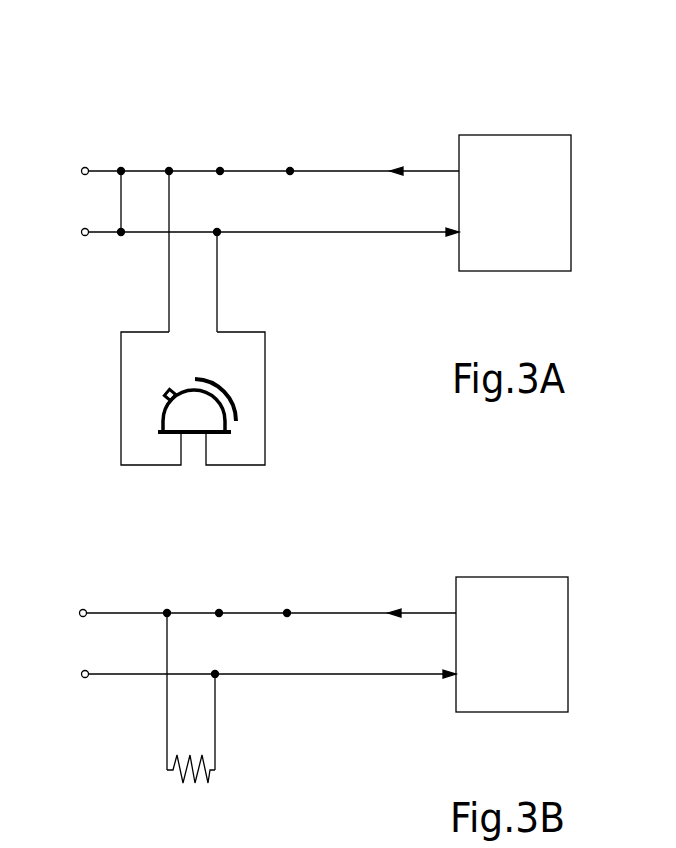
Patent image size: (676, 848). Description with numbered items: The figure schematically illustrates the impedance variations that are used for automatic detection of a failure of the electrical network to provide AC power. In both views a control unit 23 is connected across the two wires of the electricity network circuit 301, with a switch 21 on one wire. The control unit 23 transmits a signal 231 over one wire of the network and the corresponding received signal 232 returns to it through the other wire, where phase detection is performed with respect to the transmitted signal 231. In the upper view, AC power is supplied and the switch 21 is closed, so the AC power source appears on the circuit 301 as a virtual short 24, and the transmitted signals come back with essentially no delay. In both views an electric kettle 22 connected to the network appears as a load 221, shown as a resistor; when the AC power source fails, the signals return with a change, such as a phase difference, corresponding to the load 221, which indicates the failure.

In FIG. 3A, the switch 21 is at (260, 170).
In FIG. 3B, the switch 21 is at (260, 612).
In FIG. 3A, the electric kettle 22 is at (193, 434).
In FIG. 3B, the load 221 is at (200, 784).
In FIG. 3A, the control unit 23 is at (571, 174).
In FIG. 3B, the control unit 23 is at (568, 625).
In FIG. 3A, the signal 231 is at (430, 171).
In FIG. 3B, the signal 231 is at (431, 613).
In FIG. 3A, the received signal 232 is at (422, 232).
In FIG. 3B, the received signal 232 is at (422, 675).
In FIG. 3A, the virtual short 24 is at (118, 200).
In FIG. 3A, the electricity network circuit 301 is at (546, 99).
In FIG. 3B, the electricity network circuit 301 is at (549, 541).